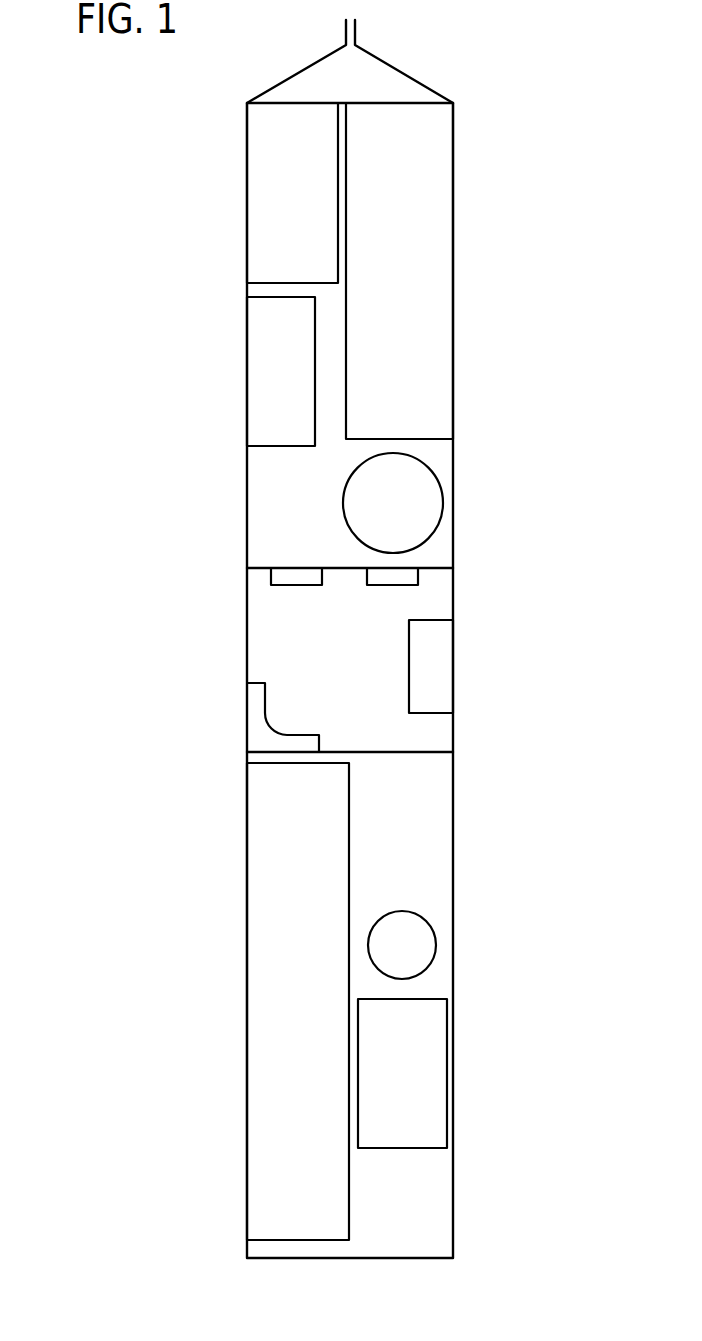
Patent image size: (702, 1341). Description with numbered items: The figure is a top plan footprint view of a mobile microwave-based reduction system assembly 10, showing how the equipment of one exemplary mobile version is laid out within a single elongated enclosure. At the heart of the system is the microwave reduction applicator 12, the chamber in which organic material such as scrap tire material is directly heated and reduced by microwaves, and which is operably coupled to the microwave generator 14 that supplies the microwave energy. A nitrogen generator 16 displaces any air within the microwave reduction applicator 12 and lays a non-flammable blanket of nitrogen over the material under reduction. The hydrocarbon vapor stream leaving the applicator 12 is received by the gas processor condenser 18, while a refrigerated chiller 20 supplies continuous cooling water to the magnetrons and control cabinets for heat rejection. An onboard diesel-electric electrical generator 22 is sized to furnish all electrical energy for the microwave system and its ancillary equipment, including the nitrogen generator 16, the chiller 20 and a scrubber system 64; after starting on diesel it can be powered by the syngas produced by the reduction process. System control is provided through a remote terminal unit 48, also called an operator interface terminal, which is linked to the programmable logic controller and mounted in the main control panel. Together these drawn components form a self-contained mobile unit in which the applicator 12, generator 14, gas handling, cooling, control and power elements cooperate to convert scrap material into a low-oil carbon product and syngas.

The mobile microwave-based reduction system assembly 10 is at (496, 71).
The microwave reduction applicator 12 is at (266, 1035).
The microwave generator 14 is at (435, 1068).
The nitrogen generator 16 is at (272, 192).
The gas processor condenser 18 is at (423, 943).
The refrigerated chiller 20 is at (267, 368).
The electrical generator 22 is at (440, 252).
The remote terminal unit 48 is at (438, 663).
The scrubber system 64 is at (428, 497).